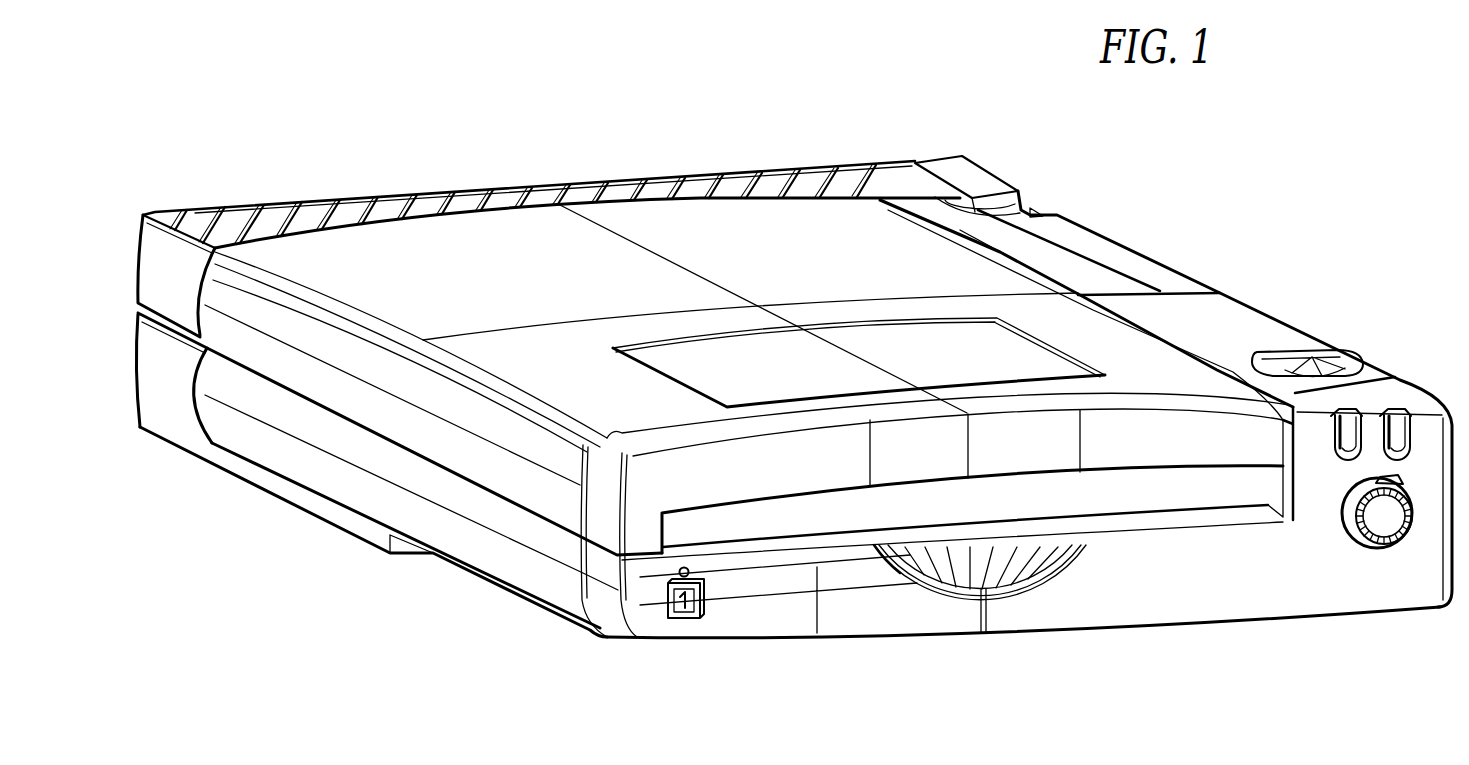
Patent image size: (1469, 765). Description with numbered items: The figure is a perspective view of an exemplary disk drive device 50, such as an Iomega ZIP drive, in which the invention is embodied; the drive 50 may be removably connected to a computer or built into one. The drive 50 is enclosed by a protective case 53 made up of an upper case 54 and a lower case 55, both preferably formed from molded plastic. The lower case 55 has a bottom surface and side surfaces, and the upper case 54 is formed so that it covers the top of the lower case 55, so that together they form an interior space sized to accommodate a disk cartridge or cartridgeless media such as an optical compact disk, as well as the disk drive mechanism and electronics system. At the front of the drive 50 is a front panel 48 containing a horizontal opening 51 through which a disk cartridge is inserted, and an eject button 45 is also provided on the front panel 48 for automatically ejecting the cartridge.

The disk drive device 50 is at (488, 148).
The protective case 53 is at (772, 235).
The upper case 54 is at (165, 268).
The lower case 55 is at (167, 382).
The horizontal opening 51 is at (982, 497).
The front panel 48 is at (1223, 567).
The eject button 45 is at (1382, 518).